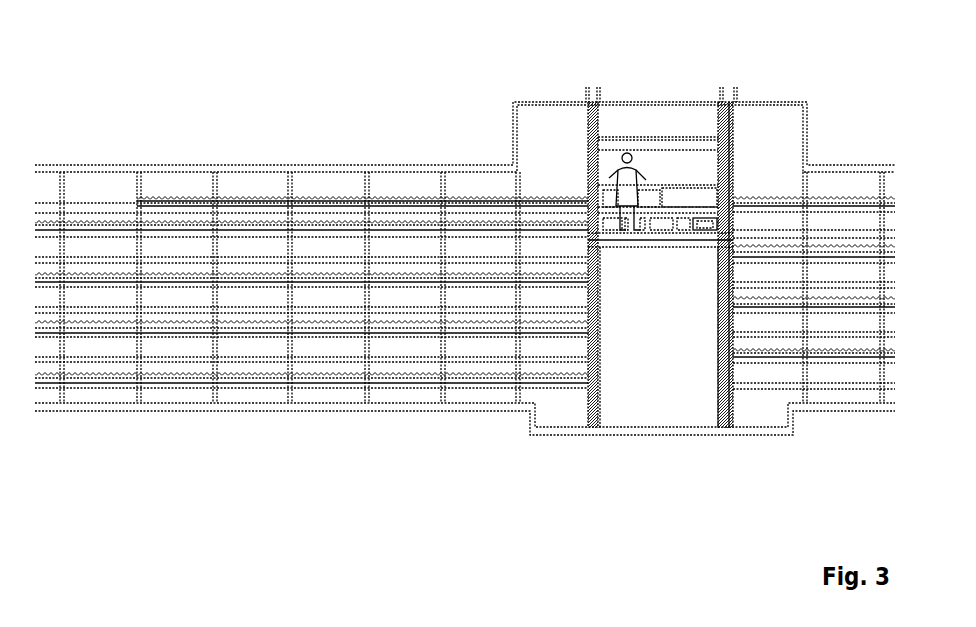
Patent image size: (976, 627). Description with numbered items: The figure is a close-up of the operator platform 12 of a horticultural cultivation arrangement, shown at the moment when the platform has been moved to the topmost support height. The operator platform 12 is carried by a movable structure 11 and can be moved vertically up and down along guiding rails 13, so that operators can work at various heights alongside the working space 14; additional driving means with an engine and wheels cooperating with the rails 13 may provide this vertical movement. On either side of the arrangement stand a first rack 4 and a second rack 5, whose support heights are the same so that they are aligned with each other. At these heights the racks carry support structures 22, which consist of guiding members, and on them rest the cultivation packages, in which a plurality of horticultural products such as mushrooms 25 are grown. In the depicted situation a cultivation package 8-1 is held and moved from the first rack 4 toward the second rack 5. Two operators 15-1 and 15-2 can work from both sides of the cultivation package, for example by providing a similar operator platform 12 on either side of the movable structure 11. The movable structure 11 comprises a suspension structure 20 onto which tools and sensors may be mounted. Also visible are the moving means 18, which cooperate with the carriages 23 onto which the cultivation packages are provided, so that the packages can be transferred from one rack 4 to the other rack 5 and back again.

The first rack 4 is at (342, 172).
The second rack 5 is at (858, 410).
The cultivation package 8-1 is at (818, 197).
The movable structure 11 is at (710, 133).
The operator platform 12 is at (667, 248).
The guiding rails 13 is at (586, 98).
The working space 14 is at (621, 262).
The operator 15-1 is at (643, 150).
The operator 15-2 is at (615, 168).
The moving means 18 is at (704, 230).
The suspension structure 20 is at (682, 196).
The support structures 22 is at (50, 237).
The carriages 23 is at (830, 203).
The mushrooms 25 is at (258, 197).